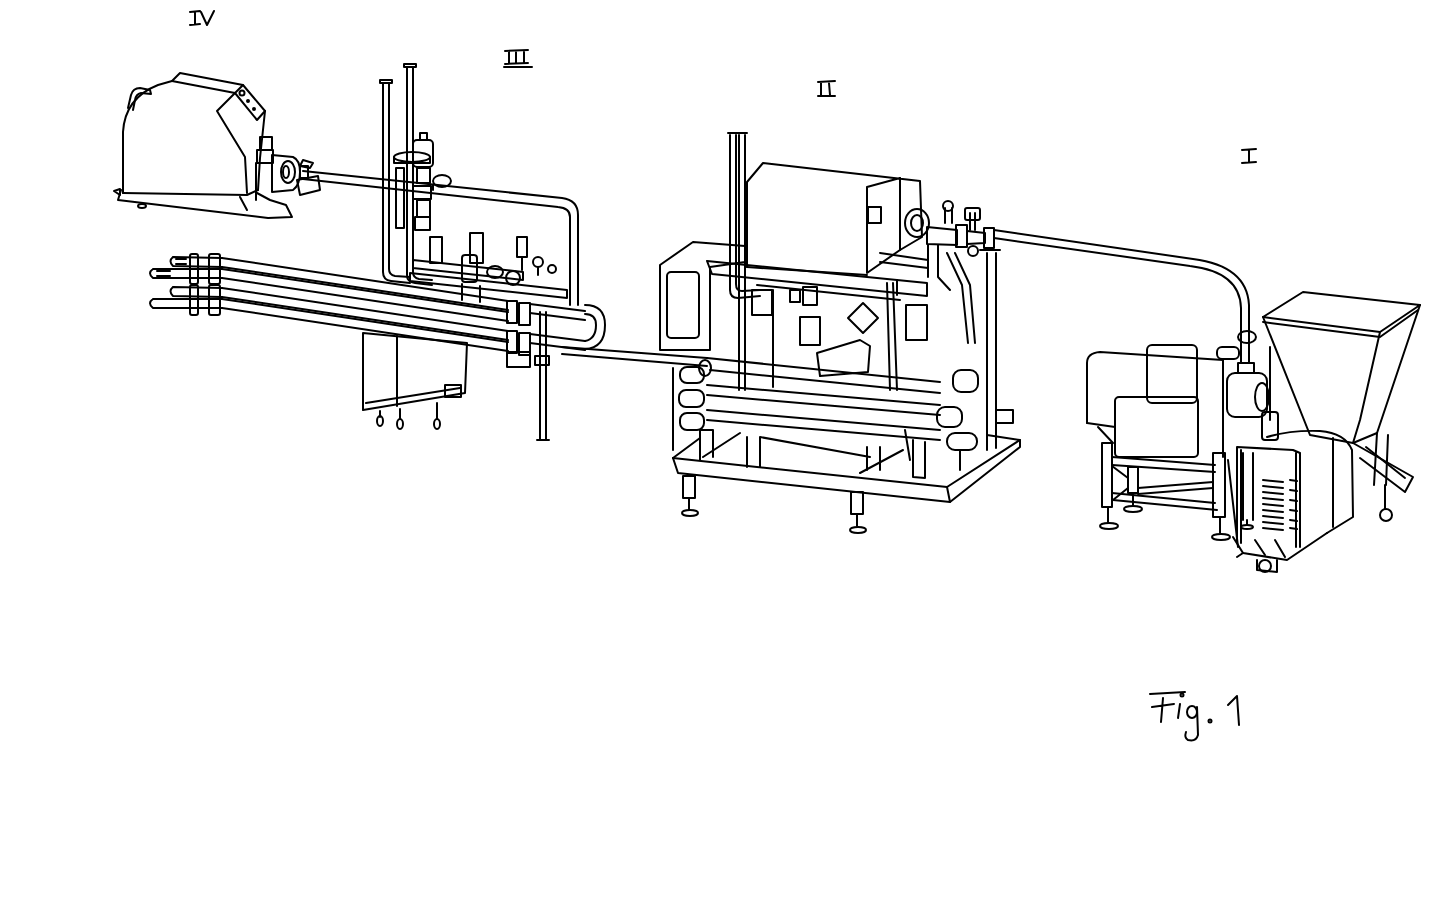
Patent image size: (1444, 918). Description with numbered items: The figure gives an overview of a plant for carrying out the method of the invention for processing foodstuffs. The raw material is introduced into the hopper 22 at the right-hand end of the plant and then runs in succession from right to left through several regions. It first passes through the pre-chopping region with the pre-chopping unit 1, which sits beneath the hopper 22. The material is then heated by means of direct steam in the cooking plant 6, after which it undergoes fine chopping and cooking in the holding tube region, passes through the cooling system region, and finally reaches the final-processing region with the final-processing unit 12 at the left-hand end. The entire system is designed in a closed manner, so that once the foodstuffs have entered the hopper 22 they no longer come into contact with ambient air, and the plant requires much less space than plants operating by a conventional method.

The pre-chopping unit 1 is at (1333, 467).
The cooking plant 6 is at (928, 205).
The final-processing unit 12 is at (250, 140).
The hopper 22 is at (1343, 308).